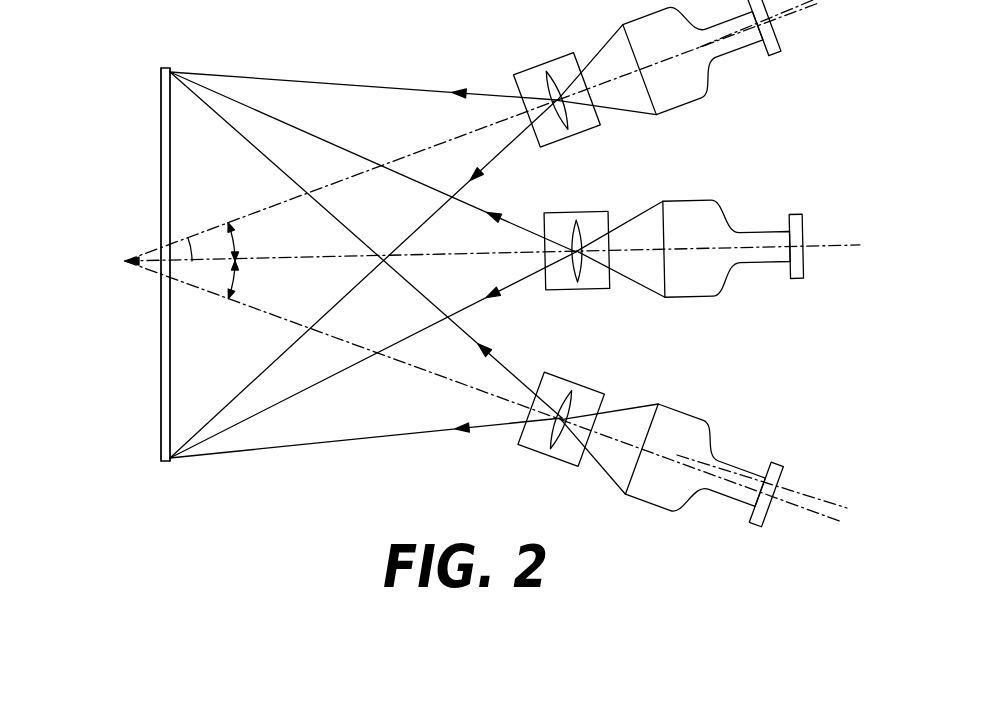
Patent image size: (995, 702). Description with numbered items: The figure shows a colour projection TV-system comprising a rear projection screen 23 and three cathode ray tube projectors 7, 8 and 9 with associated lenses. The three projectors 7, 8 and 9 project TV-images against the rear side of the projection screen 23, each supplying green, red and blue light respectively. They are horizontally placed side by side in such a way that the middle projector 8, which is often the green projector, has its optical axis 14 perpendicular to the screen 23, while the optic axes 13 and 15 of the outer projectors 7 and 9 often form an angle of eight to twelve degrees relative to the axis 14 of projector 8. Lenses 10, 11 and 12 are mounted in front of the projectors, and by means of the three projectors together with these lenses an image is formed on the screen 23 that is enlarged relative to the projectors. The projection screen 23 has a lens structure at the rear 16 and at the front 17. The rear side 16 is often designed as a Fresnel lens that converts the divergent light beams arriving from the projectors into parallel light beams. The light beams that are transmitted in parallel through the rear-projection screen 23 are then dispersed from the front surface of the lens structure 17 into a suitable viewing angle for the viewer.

The projector 7 is at (693, 68).
The projector 8 is at (715, 227).
The projector 9 is at (700, 437).
The lens 10 is at (583, 393).
The lens 11 is at (595, 282).
The lens 12 is at (583, 125).
The optic axis 13 is at (420, 367).
The central optical axis / convergence angle 14 is at (186, 239).
The optic axis 15 is at (443, 140).
The rear side 16 is at (171, 380).
The front lens structure 17 is at (160, 141).
The projection screen 23 is at (162, 333).